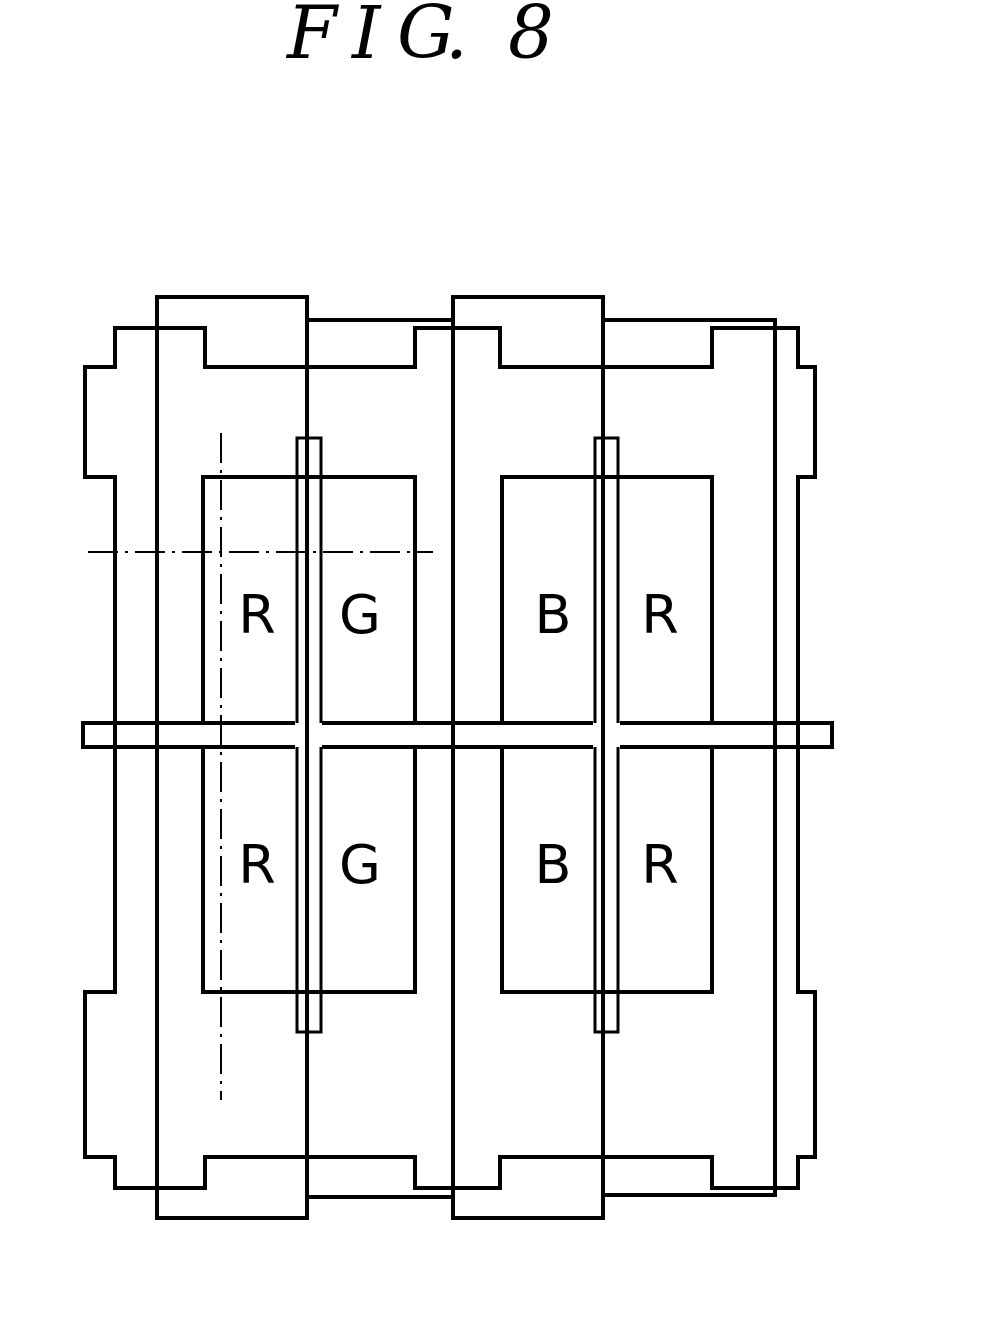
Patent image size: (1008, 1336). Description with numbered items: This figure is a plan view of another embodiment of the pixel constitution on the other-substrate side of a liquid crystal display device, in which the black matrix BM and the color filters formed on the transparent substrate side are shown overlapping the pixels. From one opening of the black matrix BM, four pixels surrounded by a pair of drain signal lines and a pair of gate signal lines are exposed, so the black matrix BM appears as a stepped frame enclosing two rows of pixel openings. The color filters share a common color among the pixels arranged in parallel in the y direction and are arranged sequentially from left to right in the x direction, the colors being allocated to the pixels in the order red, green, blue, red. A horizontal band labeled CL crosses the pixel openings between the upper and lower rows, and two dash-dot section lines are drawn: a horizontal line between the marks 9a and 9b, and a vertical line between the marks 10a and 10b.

The black matrix BM is at (88, 370).
The common line CL is at (680, 733).
The section line 9a is at (237, 552).
The section line 9b is at (270, 529).
The section line 10a is at (234, 788).
The section line 10b is at (229, 744).